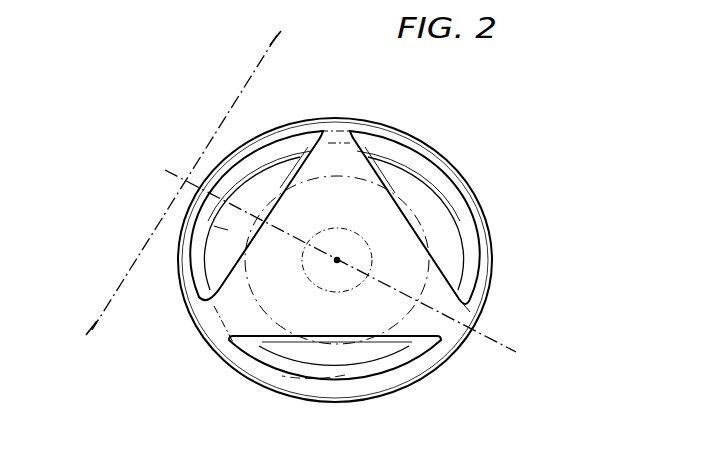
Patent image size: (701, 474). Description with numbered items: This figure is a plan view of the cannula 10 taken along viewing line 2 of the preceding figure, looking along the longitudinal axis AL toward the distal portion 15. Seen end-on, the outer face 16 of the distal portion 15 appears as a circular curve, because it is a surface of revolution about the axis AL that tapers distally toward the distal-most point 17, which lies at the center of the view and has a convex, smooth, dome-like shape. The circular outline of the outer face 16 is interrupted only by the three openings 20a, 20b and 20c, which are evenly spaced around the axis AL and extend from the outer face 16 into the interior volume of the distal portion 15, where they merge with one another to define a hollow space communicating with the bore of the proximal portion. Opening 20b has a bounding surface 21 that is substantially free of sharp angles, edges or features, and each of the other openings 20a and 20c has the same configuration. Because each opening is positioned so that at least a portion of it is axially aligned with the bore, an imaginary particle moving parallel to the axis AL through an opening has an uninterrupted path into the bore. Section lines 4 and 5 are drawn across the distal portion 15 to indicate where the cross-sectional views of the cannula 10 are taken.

The viewing line 2 is at (228, 230).
The section line 4 is at (266, 33).
The section line 5 is at (165, 170).
The cannula 10 is at (284, 260).
The distal portion 15 is at (200, 320).
The outer face 16 is at (432, 297).
The distal-most point 17 is at (337, 262).
The opening 20a is at (444, 170).
The opening 20b is at (266, 145).
The opening 20c is at (393, 381).
The bounding surface 21 is at (422, 157).